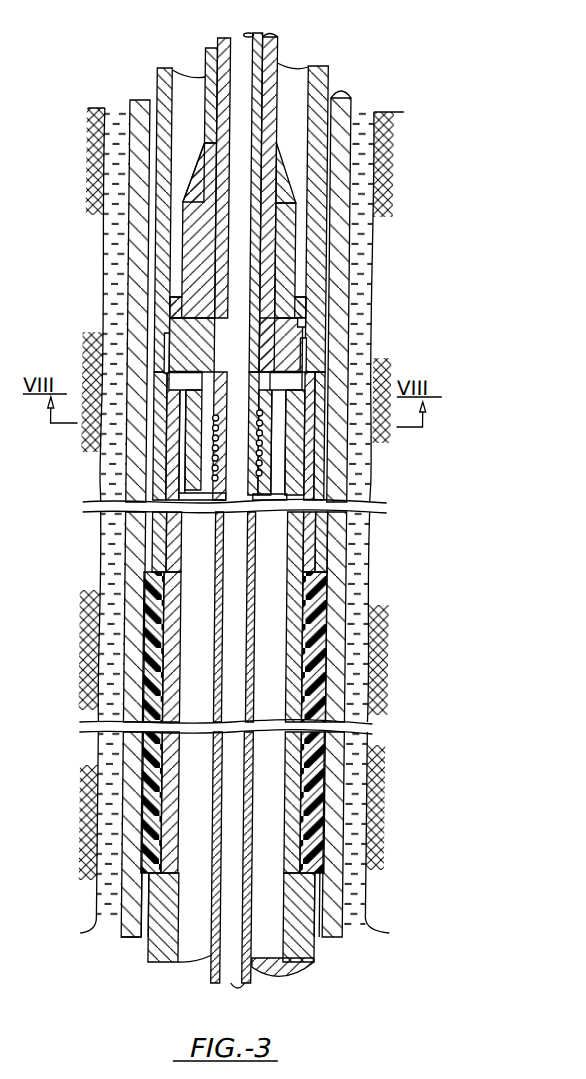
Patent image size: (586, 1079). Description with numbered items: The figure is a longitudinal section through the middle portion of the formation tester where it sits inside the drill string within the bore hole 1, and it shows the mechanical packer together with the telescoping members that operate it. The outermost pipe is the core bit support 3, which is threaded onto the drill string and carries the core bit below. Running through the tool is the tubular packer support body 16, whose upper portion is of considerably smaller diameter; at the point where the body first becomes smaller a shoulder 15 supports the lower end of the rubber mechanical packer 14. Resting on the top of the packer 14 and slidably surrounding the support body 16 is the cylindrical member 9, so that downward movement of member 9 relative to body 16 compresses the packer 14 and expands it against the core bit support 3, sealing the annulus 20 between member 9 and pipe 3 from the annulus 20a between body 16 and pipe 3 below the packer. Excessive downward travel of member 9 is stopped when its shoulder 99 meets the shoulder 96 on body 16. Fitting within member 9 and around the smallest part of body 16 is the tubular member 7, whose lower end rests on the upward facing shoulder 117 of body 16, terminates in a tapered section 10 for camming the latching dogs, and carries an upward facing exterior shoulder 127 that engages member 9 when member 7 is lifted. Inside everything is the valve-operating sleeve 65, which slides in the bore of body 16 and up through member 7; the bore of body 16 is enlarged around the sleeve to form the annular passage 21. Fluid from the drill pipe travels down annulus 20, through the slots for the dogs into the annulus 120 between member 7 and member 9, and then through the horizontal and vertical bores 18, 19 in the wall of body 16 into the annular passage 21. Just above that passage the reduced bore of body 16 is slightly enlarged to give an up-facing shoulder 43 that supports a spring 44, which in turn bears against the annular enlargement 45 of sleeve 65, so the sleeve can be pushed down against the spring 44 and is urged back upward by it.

The bore hole 1 is at (369, 118).
The core bit support pipe 3 is at (349, 114).
The tubular member 7 is at (280, 56).
The cylindrical member 9 is at (323, 86).
The tapered section 10 is at (287, 175).
The elastic mechanical packer 14 is at (324, 607).
The shoulder 15 is at (151, 888).
The packer support body 16 is at (264, 37).
The horizontal bore 18 is at (304, 380).
The vertical bore 19 is at (396, 367).
The annulus 20 is at (330, 470).
The annulus 20a is at (326, 897).
The annular passage 21 is at (284, 658).
The up-facing shoulder 43 is at (205, 485).
The spring 44 is at (216, 460).
The annular enlargement 45 is at (219, 398).
The valve-operating sleeve 65 is at (228, 36).
The shoulder 96 is at (169, 398).
The shoulder 99 is at (172, 334).
The upward facing shoulder 117 is at (306, 323).
The annulus 120 is at (192, 145).
The upward facing exterior shoulder 127 is at (301, 312).